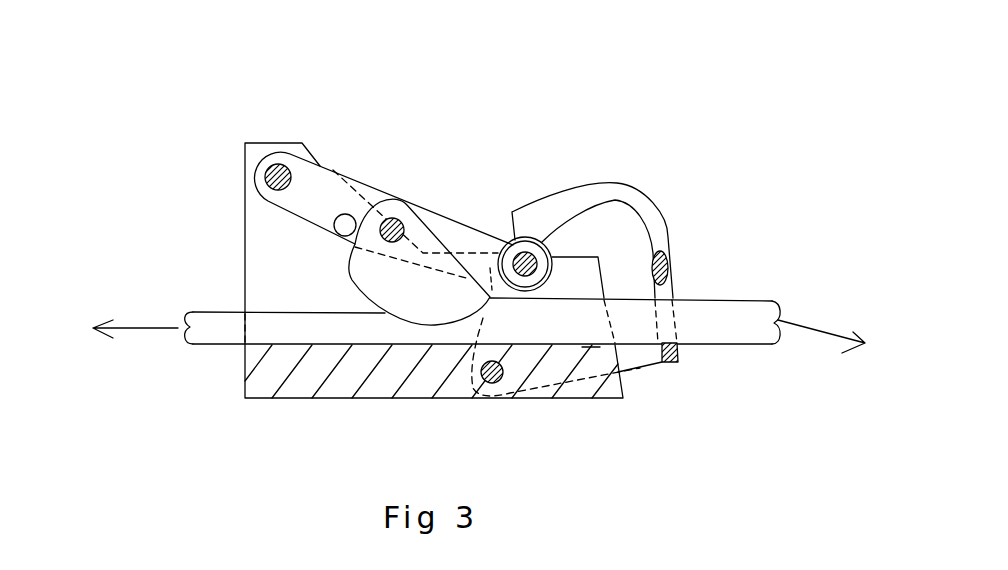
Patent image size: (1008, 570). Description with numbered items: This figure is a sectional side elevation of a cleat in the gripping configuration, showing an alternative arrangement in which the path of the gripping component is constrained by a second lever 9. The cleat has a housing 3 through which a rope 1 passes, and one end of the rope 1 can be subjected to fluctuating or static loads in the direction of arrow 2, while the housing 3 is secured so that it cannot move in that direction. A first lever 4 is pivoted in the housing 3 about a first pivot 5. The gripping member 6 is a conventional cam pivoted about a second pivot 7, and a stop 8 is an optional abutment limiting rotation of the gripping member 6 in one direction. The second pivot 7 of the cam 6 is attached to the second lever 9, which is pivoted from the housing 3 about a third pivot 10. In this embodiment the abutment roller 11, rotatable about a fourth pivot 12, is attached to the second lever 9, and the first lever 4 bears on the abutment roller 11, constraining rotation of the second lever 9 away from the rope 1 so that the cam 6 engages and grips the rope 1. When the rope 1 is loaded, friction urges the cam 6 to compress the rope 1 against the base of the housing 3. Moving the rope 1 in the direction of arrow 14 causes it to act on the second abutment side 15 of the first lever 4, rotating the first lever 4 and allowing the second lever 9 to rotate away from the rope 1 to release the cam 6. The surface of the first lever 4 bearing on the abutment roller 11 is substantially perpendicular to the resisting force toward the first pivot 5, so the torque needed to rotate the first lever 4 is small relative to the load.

The rope 1 is at (242, 325).
The arrow 2 is at (121, 329).
The housing 3 is at (355, 270).
The first lever 4 is at (630, 237).
The first pivot 5 is at (503, 378).
The gripping member 6 is at (430, 240).
The second pivot 7 is at (392, 230).
The stop 8 is at (345, 214).
The second lever 9 is at (317, 180).
The third pivot 10 is at (265, 177).
The abutment roller 11 is at (518, 238).
The fourth pivot 12 is at (525, 264).
The arrow 14 is at (846, 350).
The second abutment side 15 is at (672, 362).